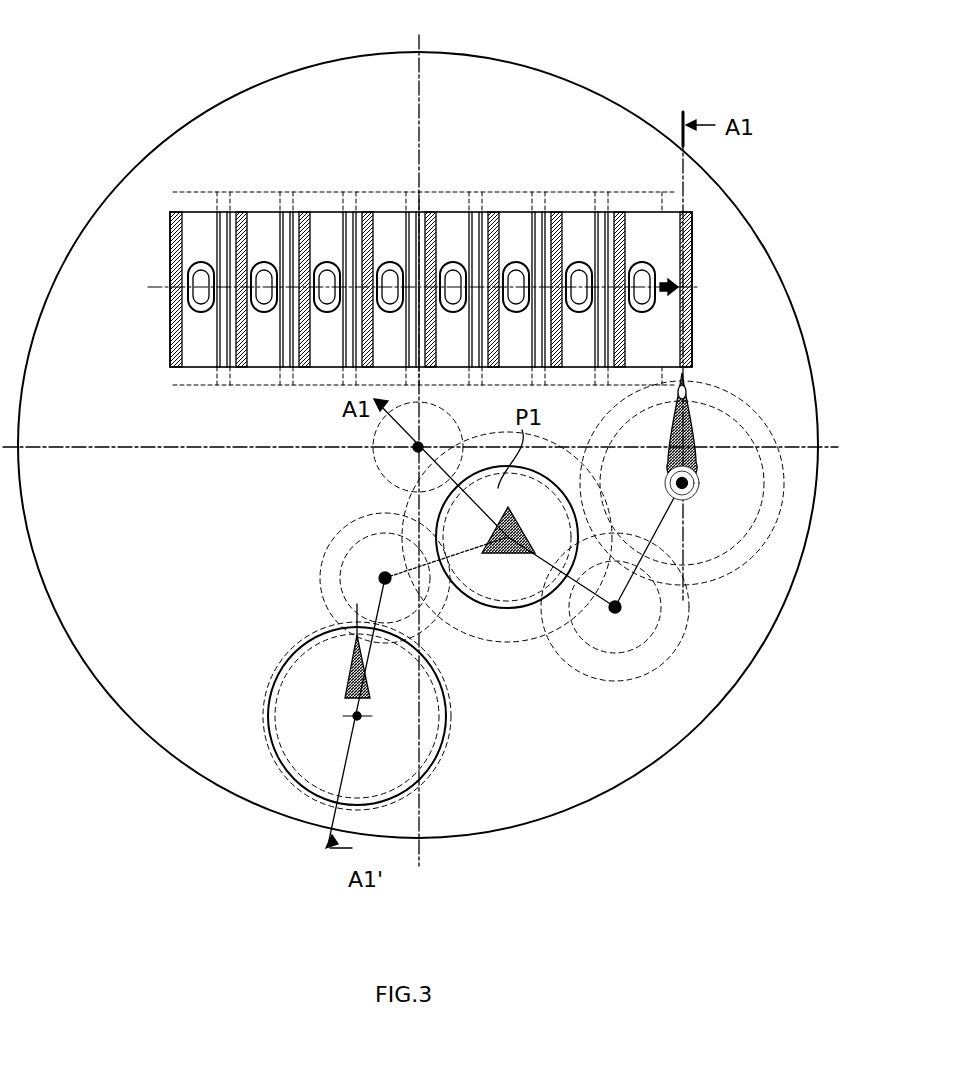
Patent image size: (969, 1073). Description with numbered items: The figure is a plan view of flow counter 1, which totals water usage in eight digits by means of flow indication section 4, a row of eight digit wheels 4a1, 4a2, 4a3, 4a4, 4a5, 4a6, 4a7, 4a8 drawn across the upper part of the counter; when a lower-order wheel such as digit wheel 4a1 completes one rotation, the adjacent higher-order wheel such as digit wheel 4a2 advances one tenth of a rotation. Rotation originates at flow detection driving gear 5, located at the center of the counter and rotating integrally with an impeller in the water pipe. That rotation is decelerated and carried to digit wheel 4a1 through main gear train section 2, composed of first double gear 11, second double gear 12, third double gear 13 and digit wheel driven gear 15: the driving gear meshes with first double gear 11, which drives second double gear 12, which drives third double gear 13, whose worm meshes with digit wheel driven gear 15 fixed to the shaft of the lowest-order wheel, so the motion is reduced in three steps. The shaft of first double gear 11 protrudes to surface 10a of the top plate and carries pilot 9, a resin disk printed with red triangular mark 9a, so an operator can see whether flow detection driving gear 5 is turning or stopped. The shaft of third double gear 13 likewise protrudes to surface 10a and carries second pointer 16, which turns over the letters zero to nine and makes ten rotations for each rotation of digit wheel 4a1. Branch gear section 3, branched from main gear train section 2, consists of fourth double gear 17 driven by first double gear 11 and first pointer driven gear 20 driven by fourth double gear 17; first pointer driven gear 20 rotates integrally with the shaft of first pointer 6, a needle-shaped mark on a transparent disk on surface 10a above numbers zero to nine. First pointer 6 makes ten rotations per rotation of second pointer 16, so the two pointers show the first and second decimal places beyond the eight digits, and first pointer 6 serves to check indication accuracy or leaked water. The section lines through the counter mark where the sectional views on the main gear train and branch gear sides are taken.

The flow counter 1 is at (575, 78).
The main gear train section 2 is at (682, 674).
The branch gear section 3 is at (320, 547).
The flow indication section 4 is at (380, 224).
The digit wheel 4a1 is at (647, 230).
The digit wheel 4a2 is at (578, 238).
The digit wheel 4a3 is at (513, 240).
The digit wheel 4a4 is at (452, 240).
The digit wheel 4a5 is at (390, 233).
The digit wheel 4a6 is at (328, 233).
The digit wheel 4a7 is at (263, 233).
The digit wheel 4a8 is at (193, 240).
The flow detection driving gear 5 is at (368, 478).
The first pointer 6 is at (342, 698).
The pilot 9 is at (507, 535).
The triangular mark 9a is at (497, 625).
The surface 10a is at (737, 627).
The first double gear 11 is at (510, 648).
The second double gear 12 is at (620, 682).
The third double gear 13 is at (795, 589).
The digit wheel driven gear 15 is at (700, 372).
The second pointer 16 is at (697, 458).
The fourth double gear 17 is at (343, 582).
The first pointer driven gear 20 is at (453, 745).